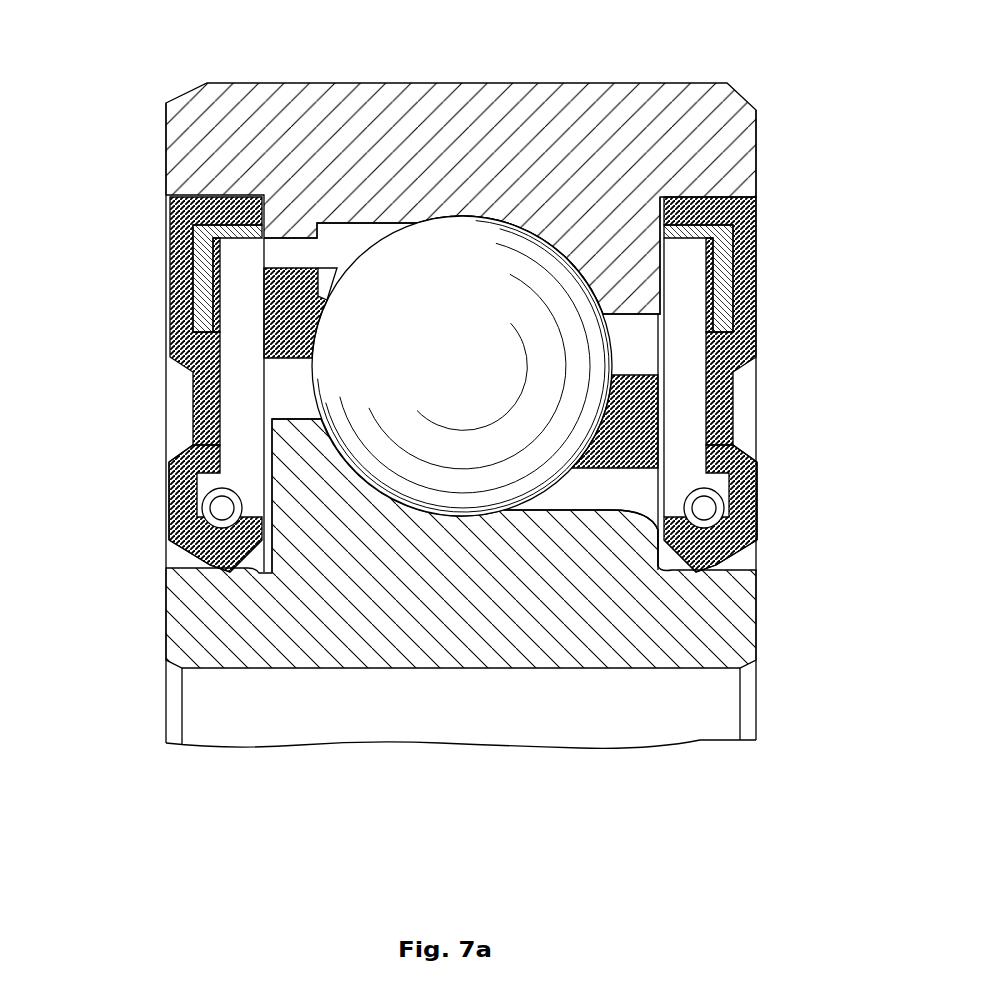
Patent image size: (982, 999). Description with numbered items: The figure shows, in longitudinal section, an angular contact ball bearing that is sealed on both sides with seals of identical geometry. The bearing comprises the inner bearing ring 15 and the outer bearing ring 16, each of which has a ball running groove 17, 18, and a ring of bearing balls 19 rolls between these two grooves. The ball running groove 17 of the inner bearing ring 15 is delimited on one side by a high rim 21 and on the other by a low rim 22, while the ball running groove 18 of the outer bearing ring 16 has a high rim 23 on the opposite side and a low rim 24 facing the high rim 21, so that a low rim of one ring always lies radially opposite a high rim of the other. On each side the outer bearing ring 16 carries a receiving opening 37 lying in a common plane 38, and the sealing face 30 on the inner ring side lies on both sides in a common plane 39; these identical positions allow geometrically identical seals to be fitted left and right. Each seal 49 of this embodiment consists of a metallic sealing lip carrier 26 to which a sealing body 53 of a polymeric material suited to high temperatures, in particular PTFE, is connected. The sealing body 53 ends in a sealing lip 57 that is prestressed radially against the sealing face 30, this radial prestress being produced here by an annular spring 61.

The inner bearing ring 15 is at (483, 650).
The outer bearing ring 16 is at (481, 88).
The ball running groove 17 is at (461, 625).
The ball running groove 18 is at (520, 220).
The bearing balls 19 is at (479, 373).
The high rim 21 is at (297, 437).
The low rim 22 is at (570, 514).
The high rim 23 is at (630, 290).
The low rim 24 is at (404, 214).
The sealing lip carrier 26 is at (200, 286).
The sealing face 30 is at (463, 687).
The receiving opening 37 is at (463, 226).
The plane 38 is at (251, 195).
The plane 39 is at (238, 574).
The seal 49 is at (148, 387).
The sealing body 53 is at (170, 477).
The sealing lip 57 is at (210, 574).
The annular spring 61 is at (203, 508).